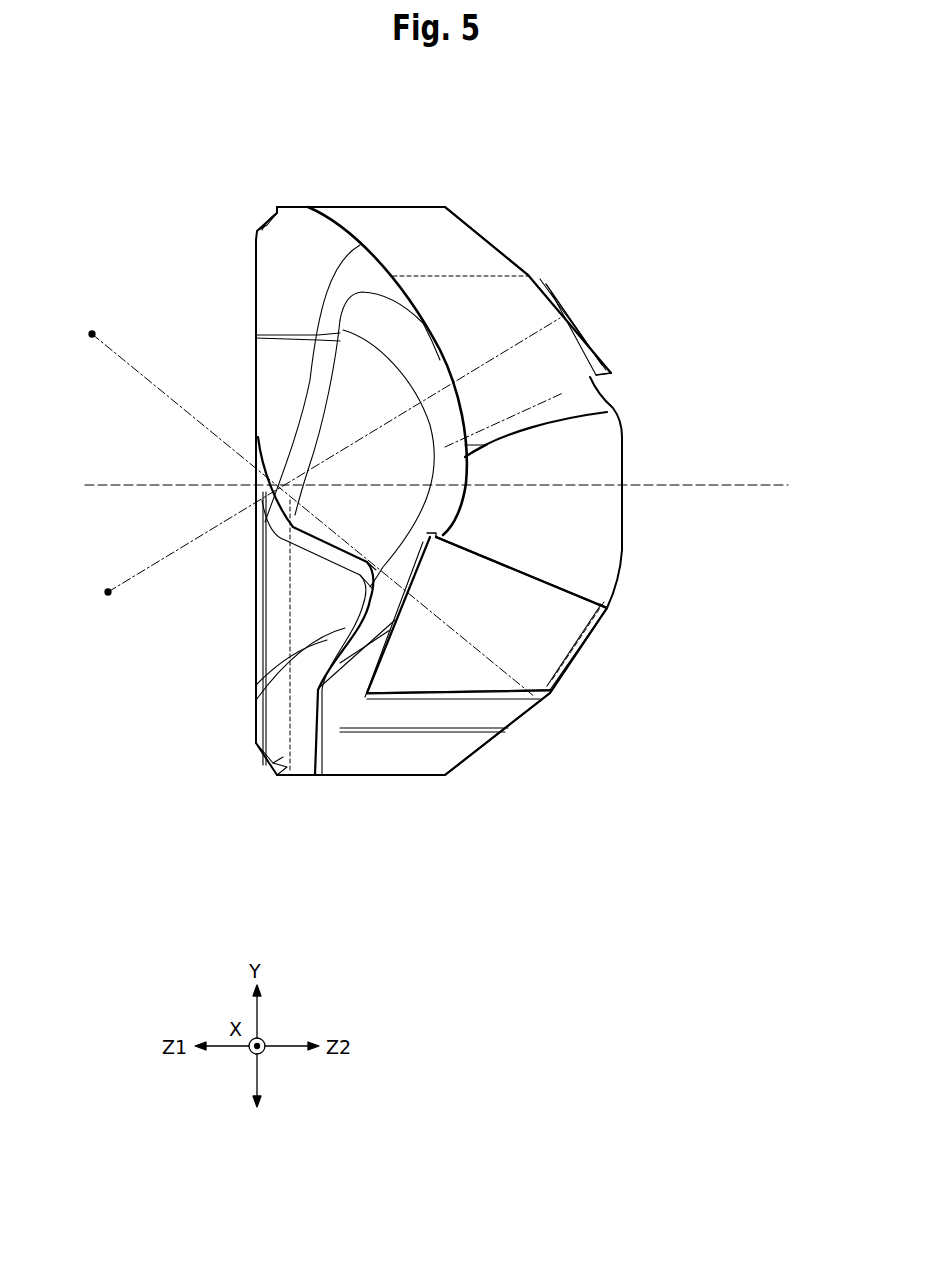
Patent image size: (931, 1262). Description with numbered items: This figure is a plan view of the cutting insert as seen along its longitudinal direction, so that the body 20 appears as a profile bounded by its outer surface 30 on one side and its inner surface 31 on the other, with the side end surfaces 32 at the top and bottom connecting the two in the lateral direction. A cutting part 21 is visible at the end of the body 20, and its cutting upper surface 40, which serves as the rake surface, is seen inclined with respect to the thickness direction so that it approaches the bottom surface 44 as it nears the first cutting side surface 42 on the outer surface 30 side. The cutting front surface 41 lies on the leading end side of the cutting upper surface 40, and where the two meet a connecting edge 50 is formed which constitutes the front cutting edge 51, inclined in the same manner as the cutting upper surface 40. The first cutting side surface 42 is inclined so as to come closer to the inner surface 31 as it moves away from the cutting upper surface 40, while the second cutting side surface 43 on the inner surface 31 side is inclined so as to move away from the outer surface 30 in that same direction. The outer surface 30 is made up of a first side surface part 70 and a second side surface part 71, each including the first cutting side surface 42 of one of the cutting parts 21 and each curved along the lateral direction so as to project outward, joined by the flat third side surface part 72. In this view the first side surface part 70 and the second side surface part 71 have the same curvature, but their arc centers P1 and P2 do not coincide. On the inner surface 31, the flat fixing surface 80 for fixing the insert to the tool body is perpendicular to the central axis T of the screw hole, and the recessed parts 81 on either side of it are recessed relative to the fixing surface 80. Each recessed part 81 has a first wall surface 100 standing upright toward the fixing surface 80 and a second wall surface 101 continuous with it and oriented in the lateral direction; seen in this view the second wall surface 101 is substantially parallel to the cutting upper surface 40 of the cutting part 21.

The body 20 is at (622, 455).
The cutting part 21 is at (591, 331).
The outer surface 30 is at (492, 236).
The inner surface 31 is at (255, 295).
The side end surface 32 is at (352, 206).
The cutting upper surface 40 is at (563, 393).
The cutting front surface 41 is at (567, 667).
The first cutting side surface 42 is at (573, 317).
The second cutting side surface 43 is at (340, 648).
The bottom surface 44 is at (450, 712).
The connecting edge 50 is at (604, 600).
The front cutting edge 51 is at (612, 385).
The first side surface part 70 is at (526, 706).
The second side surface part 71 is at (504, 258).
The third side surface part 72 is at (627, 500).
The fixing surface 80 is at (253, 385).
The recessed part 81 is at (310, 632).
The first wall surface 100 is at (325, 603).
The second wall surface 101 is at (296, 571).
The central axis T is at (446, 487).
The arc center P1 is at (297, 500).
The arc center P2 is at (318, 473).